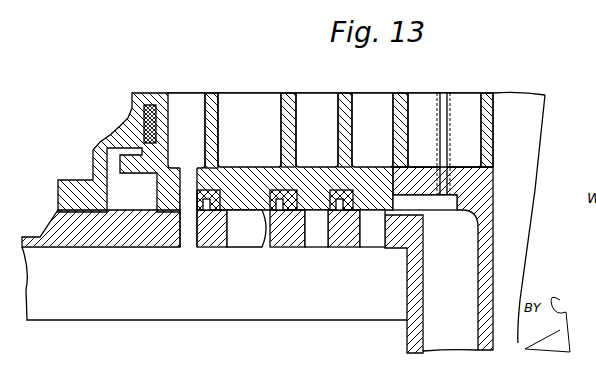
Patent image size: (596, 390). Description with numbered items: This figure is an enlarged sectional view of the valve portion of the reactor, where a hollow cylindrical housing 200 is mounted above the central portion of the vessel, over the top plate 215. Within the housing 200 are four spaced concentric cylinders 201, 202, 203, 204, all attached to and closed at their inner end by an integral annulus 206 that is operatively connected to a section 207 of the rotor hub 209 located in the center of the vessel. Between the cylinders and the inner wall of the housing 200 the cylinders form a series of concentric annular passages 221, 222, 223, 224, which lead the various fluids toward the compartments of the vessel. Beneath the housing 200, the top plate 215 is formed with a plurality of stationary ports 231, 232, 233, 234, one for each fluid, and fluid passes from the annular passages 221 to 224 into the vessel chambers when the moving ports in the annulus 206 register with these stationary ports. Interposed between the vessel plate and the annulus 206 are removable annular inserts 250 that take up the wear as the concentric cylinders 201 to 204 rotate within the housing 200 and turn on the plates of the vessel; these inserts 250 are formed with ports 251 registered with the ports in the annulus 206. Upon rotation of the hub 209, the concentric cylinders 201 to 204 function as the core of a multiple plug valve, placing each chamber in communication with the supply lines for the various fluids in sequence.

The hollow cylindrical housing 200 is at (132, 95).
The concentric cylinder 201 is at (213, 95).
The concentric cylinder 202 is at (288, 97).
The concentric cylinder 203 is at (345, 97).
The concentric cylinder 204 is at (403, 95).
The integral annulus 206 is at (413, 170).
The rotor hub section 207 is at (493, 110).
The rotor hub 209 is at (490, 240).
The top plate 215 is at (80, 243).
The annular passage 221 is at (179, 92).
The annular passage 222 is at (253, 91).
The annular passage 223 is at (318, 98).
The annular passage 224 is at (378, 98).
The port 231 is at (178, 258).
The port 232 is at (242, 238).
The port 233 is at (312, 240).
The port 234 is at (370, 240).
The removable annular insert 250 is at (185, 240).
The port 251 is at (340, 225).